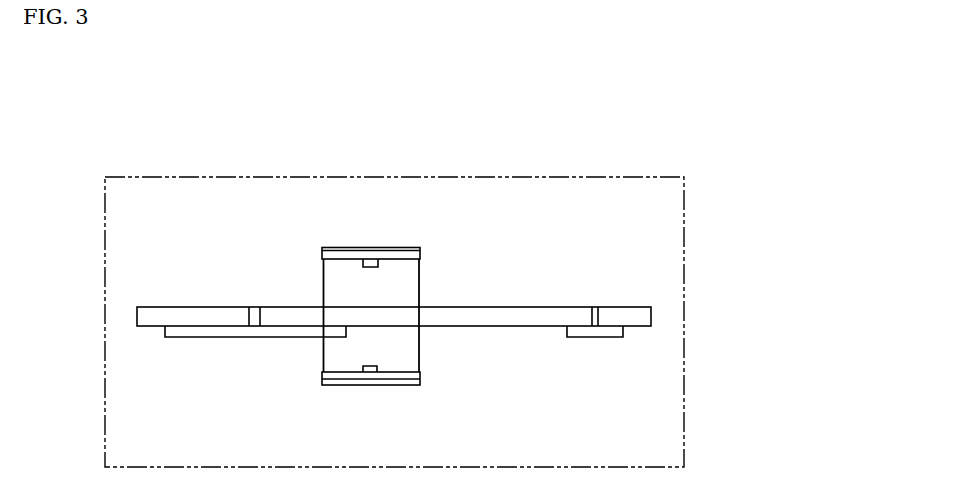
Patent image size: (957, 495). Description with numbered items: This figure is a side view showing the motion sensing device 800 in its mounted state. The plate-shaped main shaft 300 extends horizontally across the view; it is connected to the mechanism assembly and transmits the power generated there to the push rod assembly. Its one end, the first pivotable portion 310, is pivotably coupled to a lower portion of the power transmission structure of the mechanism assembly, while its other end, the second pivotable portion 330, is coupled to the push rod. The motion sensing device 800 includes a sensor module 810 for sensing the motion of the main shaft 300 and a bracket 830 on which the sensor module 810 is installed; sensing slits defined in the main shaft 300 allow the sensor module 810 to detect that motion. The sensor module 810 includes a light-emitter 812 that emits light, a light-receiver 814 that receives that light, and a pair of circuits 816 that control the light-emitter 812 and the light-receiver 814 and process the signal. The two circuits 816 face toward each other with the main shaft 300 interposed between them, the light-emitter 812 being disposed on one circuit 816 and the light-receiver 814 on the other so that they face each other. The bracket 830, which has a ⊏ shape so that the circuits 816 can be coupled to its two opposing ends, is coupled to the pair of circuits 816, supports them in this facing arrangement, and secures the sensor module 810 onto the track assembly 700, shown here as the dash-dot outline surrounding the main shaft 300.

The main shaft 300 is at (657, 319).
The first pivotable portion 310 is at (188, 332).
The second pivotable portion 330 is at (600, 340).
The track assembly 700 is at (662, 443).
The motion sensing device 800 is at (410, 218).
The sensor module 810 is at (378, 237).
The light-emitter 812 is at (372, 260).
The light-receiver 814 is at (373, 365).
The circuit 816 is at (330, 253).
The bracket 830 is at (413, 288).